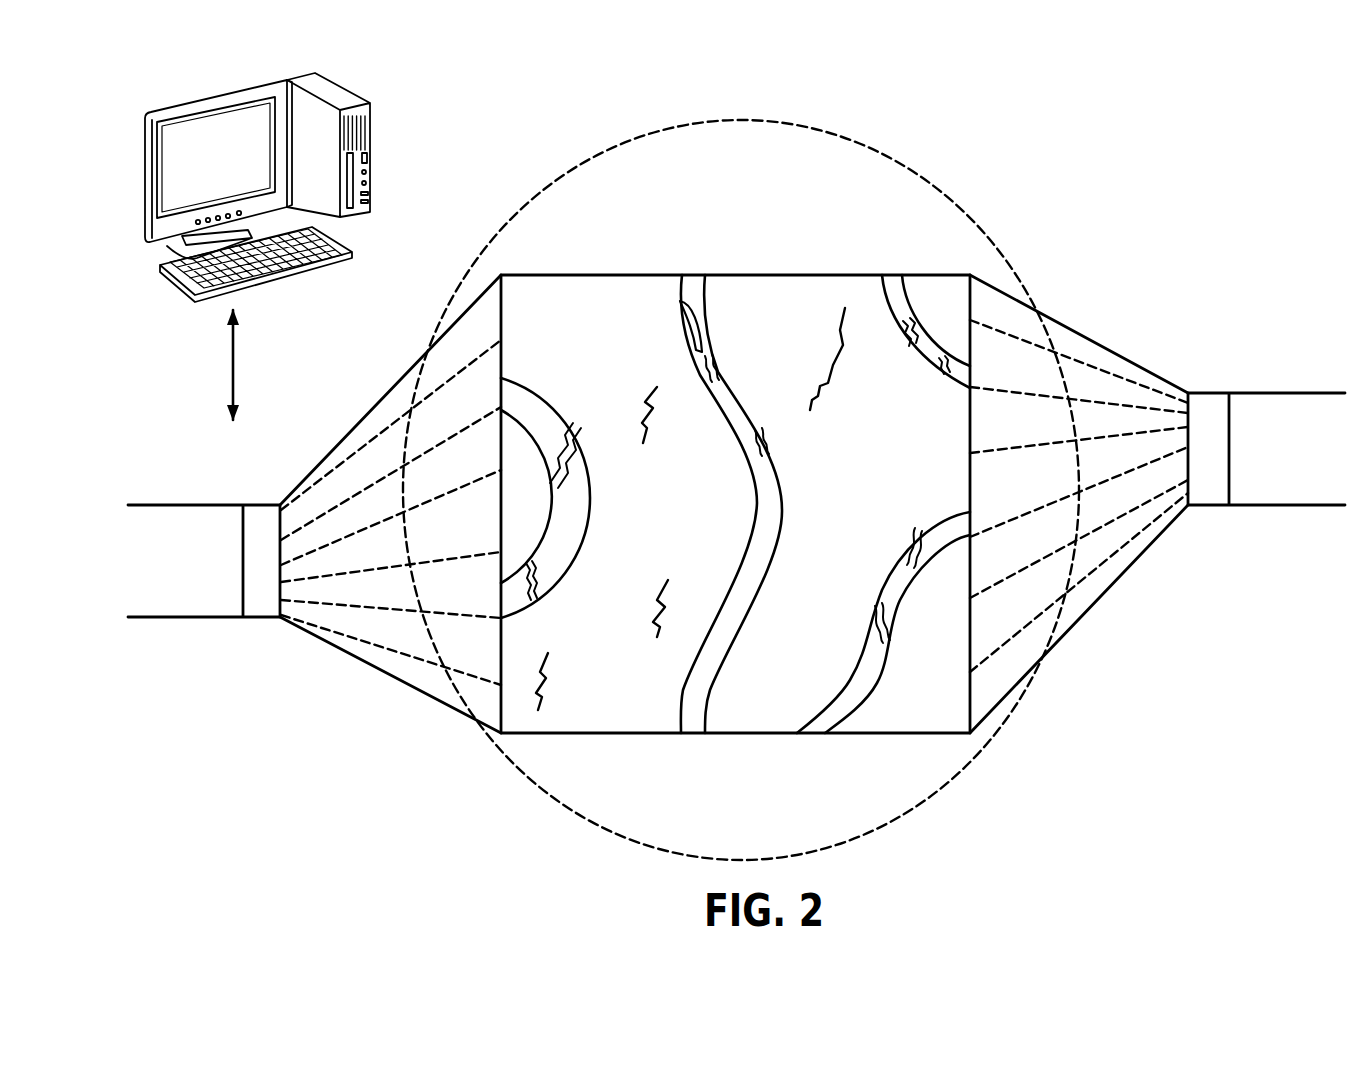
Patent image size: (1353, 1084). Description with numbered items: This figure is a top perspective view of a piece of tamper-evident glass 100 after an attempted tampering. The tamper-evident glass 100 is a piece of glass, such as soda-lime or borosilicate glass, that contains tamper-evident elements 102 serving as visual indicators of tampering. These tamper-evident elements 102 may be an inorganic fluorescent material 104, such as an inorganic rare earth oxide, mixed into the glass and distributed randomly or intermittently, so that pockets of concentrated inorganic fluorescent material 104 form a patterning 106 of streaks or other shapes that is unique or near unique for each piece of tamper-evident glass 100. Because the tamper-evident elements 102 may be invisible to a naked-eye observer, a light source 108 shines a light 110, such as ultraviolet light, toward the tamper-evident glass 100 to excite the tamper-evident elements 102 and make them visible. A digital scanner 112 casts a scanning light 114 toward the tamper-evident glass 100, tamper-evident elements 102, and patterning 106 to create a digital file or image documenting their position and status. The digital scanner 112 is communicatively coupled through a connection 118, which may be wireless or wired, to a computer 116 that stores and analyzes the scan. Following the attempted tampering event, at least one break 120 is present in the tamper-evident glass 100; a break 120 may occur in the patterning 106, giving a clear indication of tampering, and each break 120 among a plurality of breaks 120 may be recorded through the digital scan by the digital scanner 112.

The tamper-evident glass 100 is at (1077, 170).
The tamper-evident elements 102 is at (533, 415).
The inorganic fluorescent material 104 is at (818, 310).
The patterning 106 is at (567, 547).
The light source 108 is at (1267, 488).
The light 110 is at (1098, 392).
The digital scanner 112 is at (185, 595).
The scanning light 114 is at (380, 573).
The computer 116 is at (373, 147).
The connection 118 is at (233, 372).
The break 120 is at (903, 345).